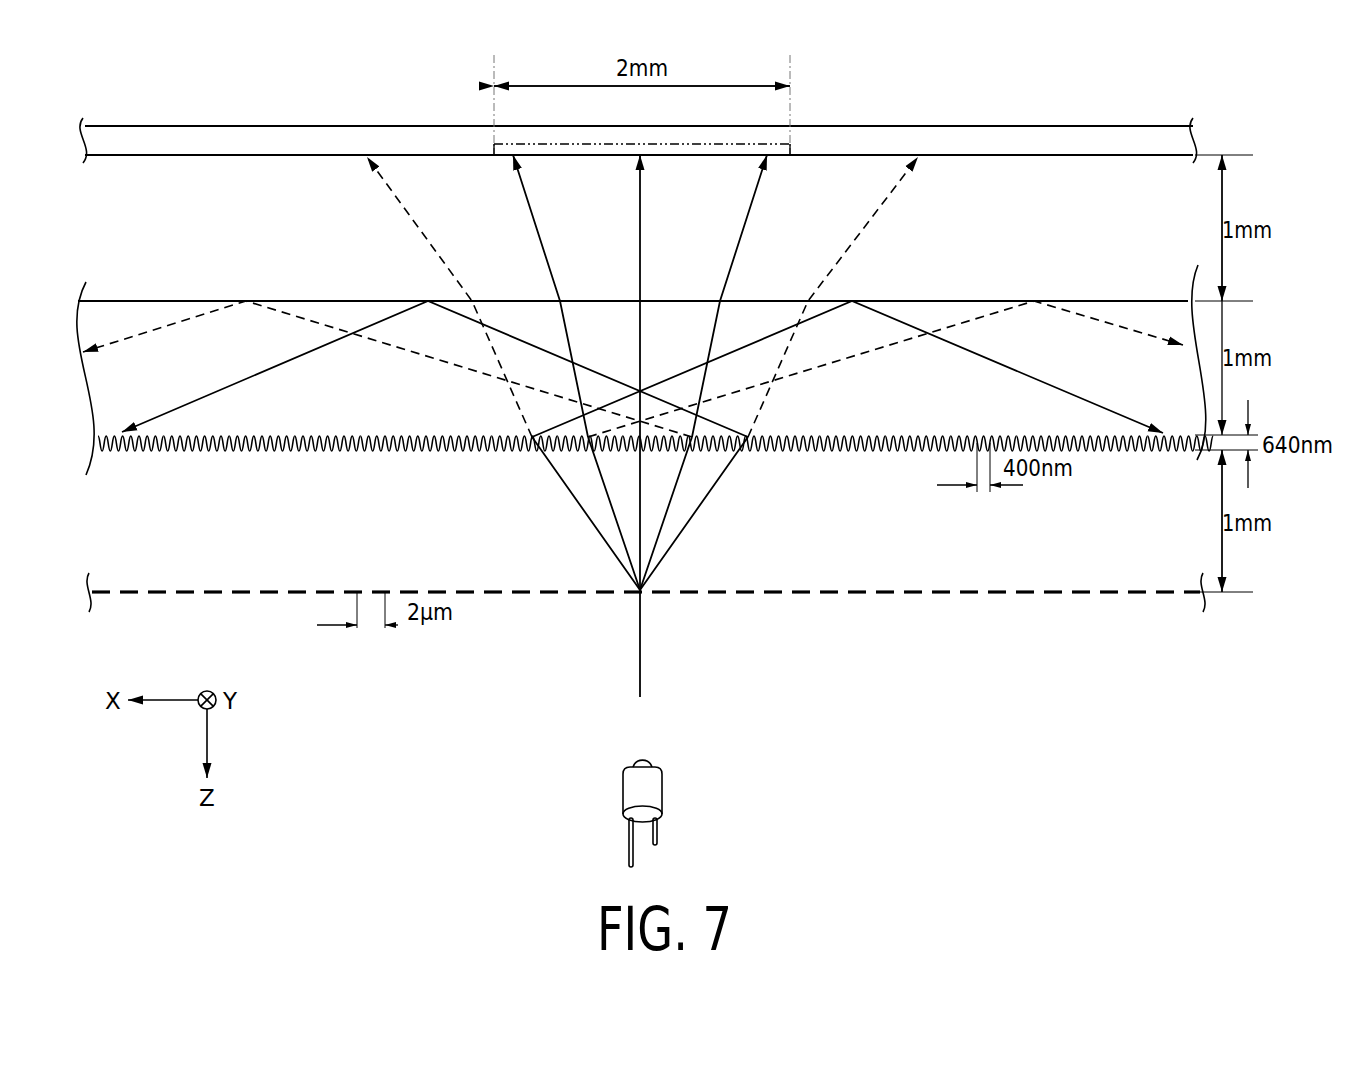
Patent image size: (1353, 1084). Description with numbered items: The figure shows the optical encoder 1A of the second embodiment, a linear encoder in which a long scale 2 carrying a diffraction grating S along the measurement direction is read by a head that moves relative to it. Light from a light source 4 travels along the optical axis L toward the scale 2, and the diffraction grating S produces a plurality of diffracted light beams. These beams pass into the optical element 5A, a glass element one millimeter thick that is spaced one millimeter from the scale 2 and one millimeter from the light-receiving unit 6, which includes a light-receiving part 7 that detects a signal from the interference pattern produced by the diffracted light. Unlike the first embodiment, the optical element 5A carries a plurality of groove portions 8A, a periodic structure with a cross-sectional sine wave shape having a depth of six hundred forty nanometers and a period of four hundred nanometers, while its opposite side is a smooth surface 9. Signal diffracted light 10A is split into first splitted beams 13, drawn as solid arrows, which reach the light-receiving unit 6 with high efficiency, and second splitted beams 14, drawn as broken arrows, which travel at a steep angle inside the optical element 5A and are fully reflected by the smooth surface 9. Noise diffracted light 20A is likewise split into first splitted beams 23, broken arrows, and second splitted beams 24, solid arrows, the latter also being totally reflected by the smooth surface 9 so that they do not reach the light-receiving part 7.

The light-receiving unit 6 is at (1075, 126).
The light-receiving part 7 is at (790, 143).
The optical element 5A is at (1072, 280).
The smooth surface 9 is at (338, 300).
The groove portions 8A is at (438, 458).
The diffraction grating S is at (887, 593).
The scale 2 is at (1082, 593).
The optical encoder 1A is at (1020, 658).
The optical axis L is at (640, 446).
The light source 4 is at (663, 792).
The signal diffracted light 10A is at (612, 507).
The noise diffracted light 20A is at (606, 544).
The first splitted beams 13 is at (537, 218).
The second splitted beams 14 is at (170, 325).
The first splitted beams 23 is at (420, 214).
The second splitted beams 24 is at (267, 370).